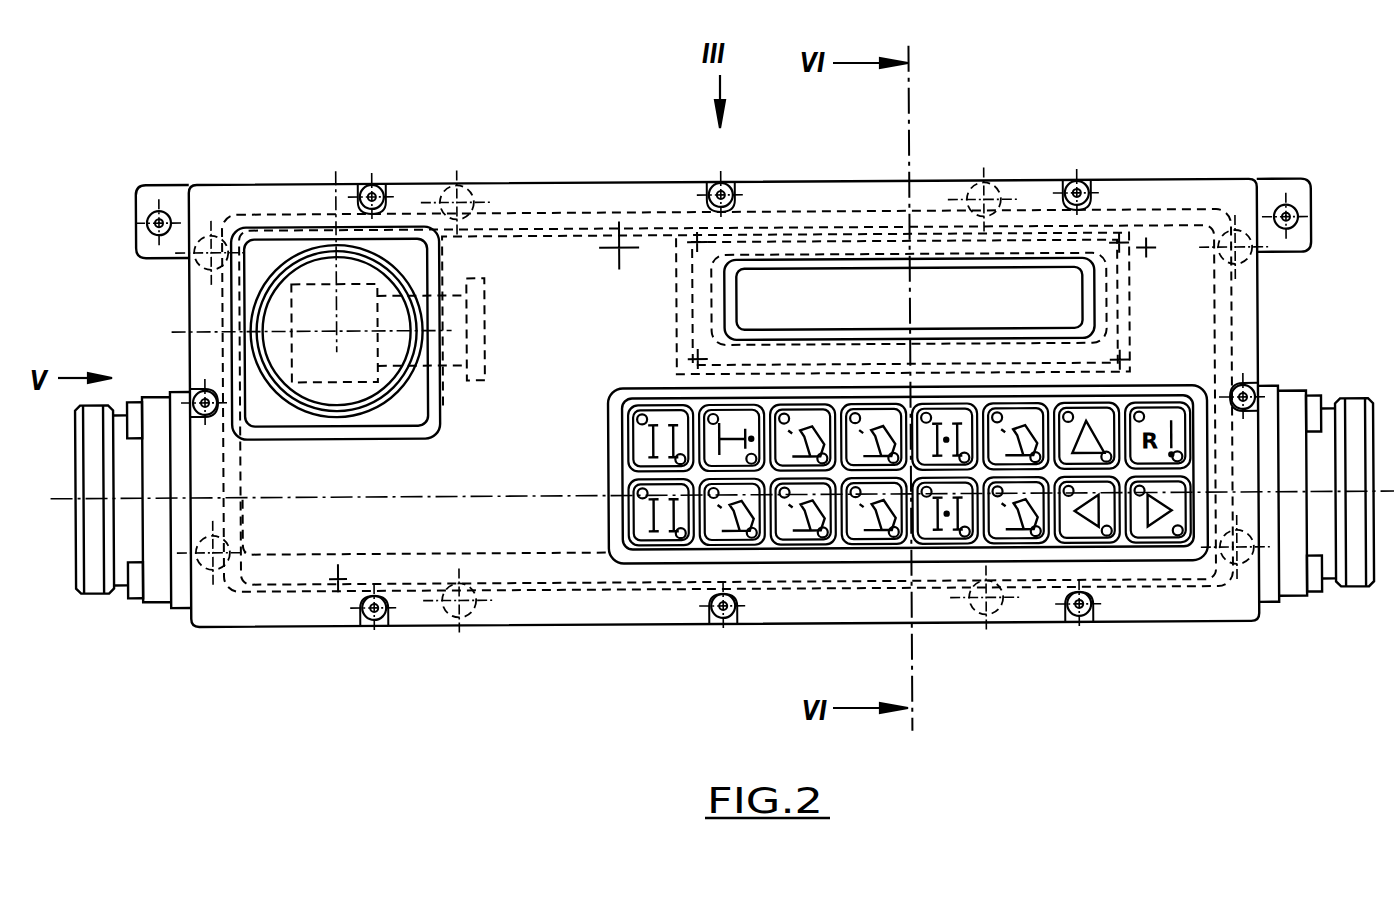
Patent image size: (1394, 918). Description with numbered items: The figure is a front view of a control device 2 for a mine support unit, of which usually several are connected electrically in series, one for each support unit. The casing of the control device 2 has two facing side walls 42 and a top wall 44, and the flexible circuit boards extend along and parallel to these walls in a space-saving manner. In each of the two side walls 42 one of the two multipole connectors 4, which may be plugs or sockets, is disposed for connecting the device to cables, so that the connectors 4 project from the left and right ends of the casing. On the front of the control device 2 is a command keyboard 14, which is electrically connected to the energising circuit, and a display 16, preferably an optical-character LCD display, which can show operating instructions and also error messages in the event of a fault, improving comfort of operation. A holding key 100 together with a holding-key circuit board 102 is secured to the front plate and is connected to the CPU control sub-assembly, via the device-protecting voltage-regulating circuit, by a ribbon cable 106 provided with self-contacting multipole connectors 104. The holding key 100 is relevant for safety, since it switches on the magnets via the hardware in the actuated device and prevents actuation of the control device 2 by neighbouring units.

The control device 2 is at (1203, 168).
The multipole connectors 4 is at (94, 568).
The command keyboard 14 is at (612, 500).
The display 16 is at (996, 277).
The side walls 42 is at (190, 303).
The top wall 44 is at (857, 183).
The holding key 100 is at (290, 262).
The holding-key circuit board 102 is at (313, 283).
The multipole connectors 104 is at (488, 313).
The ribbon cable 106 is at (451, 355).